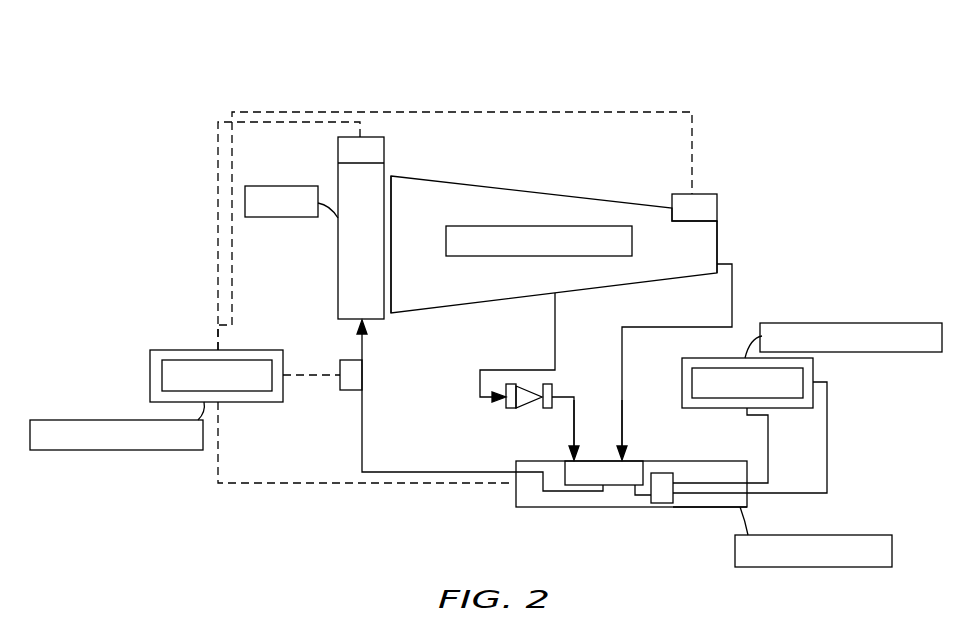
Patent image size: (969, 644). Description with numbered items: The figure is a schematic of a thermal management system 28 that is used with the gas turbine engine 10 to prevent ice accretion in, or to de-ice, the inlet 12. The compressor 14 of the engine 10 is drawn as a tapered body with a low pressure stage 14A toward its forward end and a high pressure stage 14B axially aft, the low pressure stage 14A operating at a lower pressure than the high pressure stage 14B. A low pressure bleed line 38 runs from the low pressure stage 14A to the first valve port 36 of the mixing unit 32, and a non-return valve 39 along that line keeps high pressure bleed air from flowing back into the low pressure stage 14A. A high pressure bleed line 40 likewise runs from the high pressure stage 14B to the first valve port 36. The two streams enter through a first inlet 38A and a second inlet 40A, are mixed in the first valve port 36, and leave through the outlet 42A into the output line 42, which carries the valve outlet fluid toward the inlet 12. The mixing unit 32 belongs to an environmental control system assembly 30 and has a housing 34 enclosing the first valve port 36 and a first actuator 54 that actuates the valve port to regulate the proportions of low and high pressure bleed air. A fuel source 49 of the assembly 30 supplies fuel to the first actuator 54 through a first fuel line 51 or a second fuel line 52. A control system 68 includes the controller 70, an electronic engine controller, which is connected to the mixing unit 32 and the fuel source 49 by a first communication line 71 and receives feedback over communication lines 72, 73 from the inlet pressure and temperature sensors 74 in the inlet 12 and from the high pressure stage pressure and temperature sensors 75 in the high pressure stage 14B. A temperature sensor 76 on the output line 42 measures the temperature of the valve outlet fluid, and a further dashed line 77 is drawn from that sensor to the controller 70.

The gas turbine engine 10 is at (626, 185).
The inlet 12 is at (280, 186).
The compressor 14 is at (520, 196).
The low pressure stage 14A is at (402, 183).
The high pressure stage 14B is at (718, 248).
The thermal management system 28 is at (236, 88).
The environmental control system assembly 30 is at (858, 482).
The mixing unit 32 is at (755, 568).
The housing 34 is at (696, 506).
The first valve port 36 is at (596, 460).
The low pressure bleed line 38 is at (544, 330).
The first inlet 38A is at (573, 425).
The non-return valve 39 is at (507, 407).
The high pressure bleed line 40 is at (746, 291).
The second inlet 40A is at (623, 398).
The output line 42 is at (362, 440).
The outlet 42A is at (582, 493).
The fuel source 49 is at (885, 323).
The first fuel line 51 is at (830, 415).
The second fuel line 52 is at (766, 448).
The first actuator 54 is at (660, 503).
The control system 68 is at (182, 283).
The controller 70 is at (70, 420).
The first communication line 71 is at (297, 484).
The communication line 72 is at (229, 112).
The communication line 73 is at (575, 112).
The inlet pressure and temperature sensors 74 is at (385, 150).
The high pressure stage pressure and temperature sensors 75 is at (710, 194).
The temperature sensor 76 is at (340, 360).
The controller signal line to sensor 76 77 is at (297, 377).